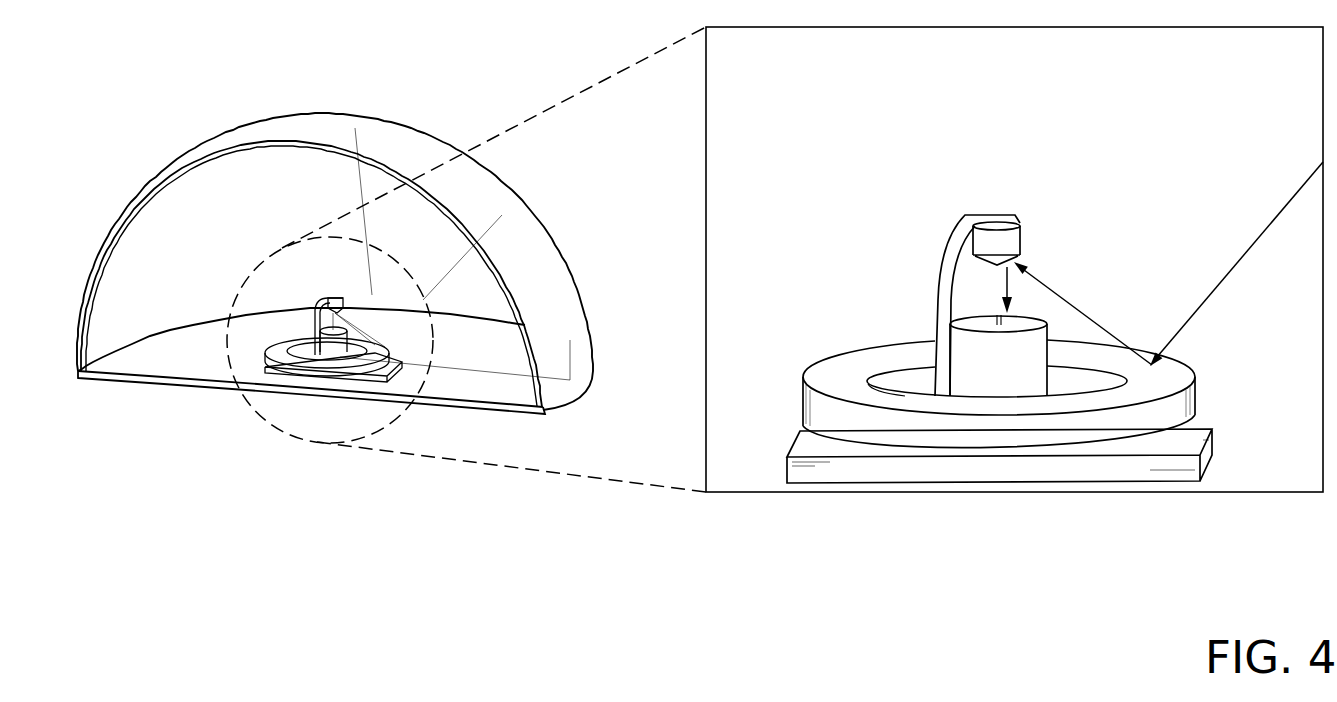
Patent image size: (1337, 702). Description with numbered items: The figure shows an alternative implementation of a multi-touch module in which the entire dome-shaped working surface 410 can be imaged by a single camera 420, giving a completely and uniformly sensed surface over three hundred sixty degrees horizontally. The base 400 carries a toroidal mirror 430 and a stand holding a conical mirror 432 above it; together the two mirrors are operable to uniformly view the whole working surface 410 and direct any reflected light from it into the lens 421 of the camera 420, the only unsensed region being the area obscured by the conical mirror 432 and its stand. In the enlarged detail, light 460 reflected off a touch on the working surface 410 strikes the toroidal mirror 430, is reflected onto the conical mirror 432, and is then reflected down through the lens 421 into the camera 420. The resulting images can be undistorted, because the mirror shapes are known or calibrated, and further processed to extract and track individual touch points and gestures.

The base 400 is at (155, 357).
The working surface 410 is at (223, 147).
The camera 420 is at (797, 442).
The lens 421 is at (980, 325).
The toroidal mirror 430 is at (1176, 365).
The conical mirror 432 is at (1016, 258).
The light 460 is at (1258, 238).